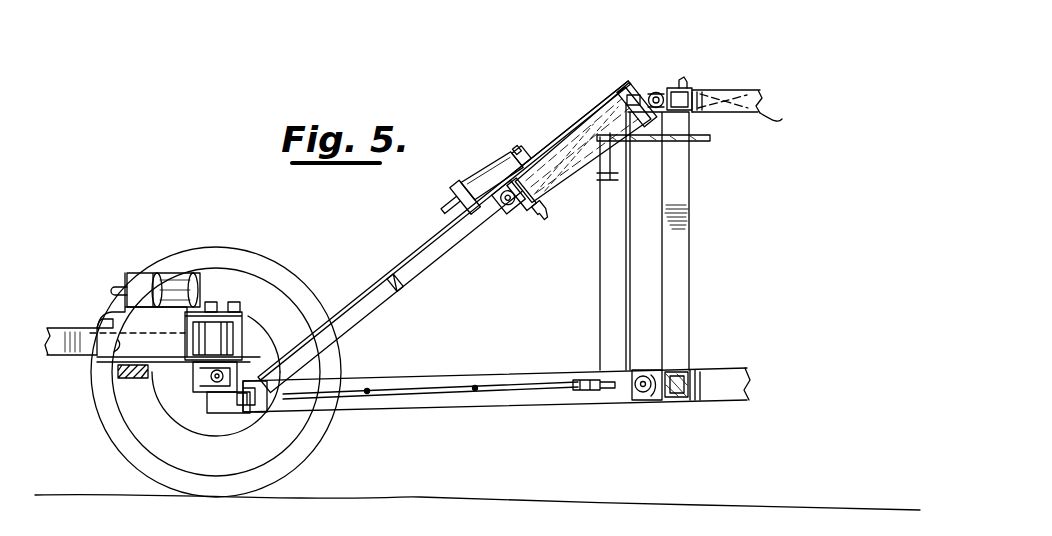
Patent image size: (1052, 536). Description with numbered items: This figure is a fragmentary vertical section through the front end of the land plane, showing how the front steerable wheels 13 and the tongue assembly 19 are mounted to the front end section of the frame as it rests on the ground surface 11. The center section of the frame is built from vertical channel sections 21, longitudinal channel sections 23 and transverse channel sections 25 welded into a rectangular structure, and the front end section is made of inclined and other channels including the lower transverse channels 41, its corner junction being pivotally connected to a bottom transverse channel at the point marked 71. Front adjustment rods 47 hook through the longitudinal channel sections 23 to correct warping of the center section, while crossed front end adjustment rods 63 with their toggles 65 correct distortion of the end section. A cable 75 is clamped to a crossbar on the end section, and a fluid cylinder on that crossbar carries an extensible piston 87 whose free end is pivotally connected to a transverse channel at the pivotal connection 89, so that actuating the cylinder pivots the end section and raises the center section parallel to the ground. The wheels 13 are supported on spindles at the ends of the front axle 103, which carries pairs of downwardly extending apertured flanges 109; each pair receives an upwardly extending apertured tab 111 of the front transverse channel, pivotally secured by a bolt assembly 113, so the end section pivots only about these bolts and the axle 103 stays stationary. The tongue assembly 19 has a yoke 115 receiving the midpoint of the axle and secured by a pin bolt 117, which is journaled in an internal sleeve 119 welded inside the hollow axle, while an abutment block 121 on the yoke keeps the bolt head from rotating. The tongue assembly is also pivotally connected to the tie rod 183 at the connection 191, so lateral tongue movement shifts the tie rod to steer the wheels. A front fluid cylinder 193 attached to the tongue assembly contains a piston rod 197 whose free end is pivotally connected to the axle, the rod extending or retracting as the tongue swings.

The ground surface 11 is at (425, 496).
The front steerable wheels 13 is at (194, 258).
The tongue assembly 19 is at (59, 323).
The vertical channel sections 21 is at (679, 223).
The longitudinal channel sections 23 is at (748, 89).
The transverse channel sections 25 is at (693, 82).
The lower transverse channels 41 is at (262, 405).
The front adjustment rods 47 is at (784, 120).
The front end adjustment rods 63 is at (487, 384).
The toggles 65 is at (575, 392).
The pivotal connection 71 is at (643, 403).
The cable 75 is at (702, 141).
The extensible piston 87 is at (633, 93).
The pivotal connection 89 is at (660, 92).
The front axle 103 is at (241, 323).
The apertured flanges 109 is at (196, 372).
The apertured tab 111 is at (214, 383).
The bolt assembly 113 is at (200, 377).
The yoke 115 is at (105, 323).
The pin bolt 117 is at (213, 303).
The internal sleeve 119 is at (261, 347).
The abutment block 121 is at (242, 310).
The tie rod 183 is at (117, 378).
The pivotal connection 191 is at (114, 357).
The front fluid cylinder 193 is at (173, 287).
The piston rod 197 is at (116, 287).